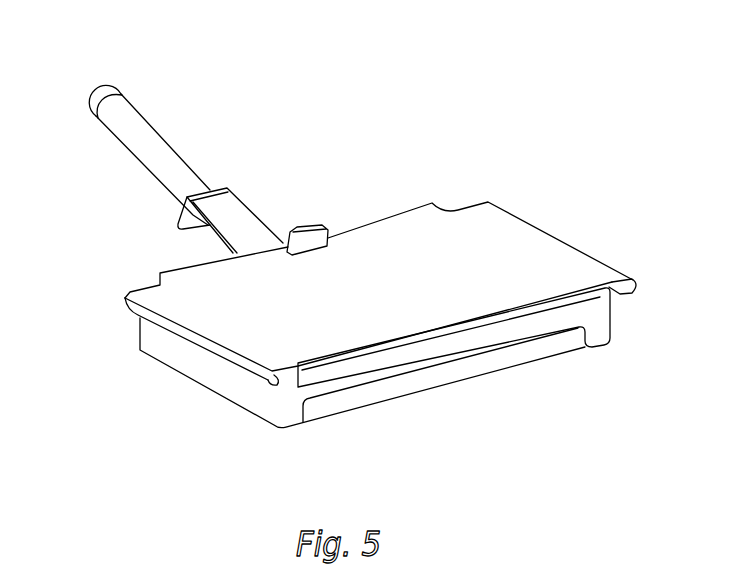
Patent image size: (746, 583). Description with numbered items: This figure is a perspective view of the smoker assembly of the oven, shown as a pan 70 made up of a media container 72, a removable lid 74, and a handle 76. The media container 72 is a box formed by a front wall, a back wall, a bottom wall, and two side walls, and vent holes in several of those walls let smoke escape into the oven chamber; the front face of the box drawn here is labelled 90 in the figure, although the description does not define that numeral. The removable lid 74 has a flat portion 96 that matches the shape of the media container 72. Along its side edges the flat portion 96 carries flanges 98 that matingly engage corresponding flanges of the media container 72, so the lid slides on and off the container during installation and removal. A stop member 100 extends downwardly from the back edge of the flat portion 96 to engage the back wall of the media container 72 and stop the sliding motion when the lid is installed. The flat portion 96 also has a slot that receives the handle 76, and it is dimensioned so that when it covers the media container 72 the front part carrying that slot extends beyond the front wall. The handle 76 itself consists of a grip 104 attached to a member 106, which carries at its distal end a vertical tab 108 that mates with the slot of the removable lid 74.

The pan 70 is at (545, 162).
The media container 72 is at (168, 387).
The removable lid 74 is at (555, 236).
The handle 76 is at (157, 127).
The front wall of tray 90 is at (342, 398).
The flat portion 96 is at (392, 300).
The flanges 98 is at (130, 310).
The stop member 100 is at (582, 305).
The grip 104 is at (125, 108).
The member 106 is at (237, 190).
The vertical tab 108 is at (318, 226).